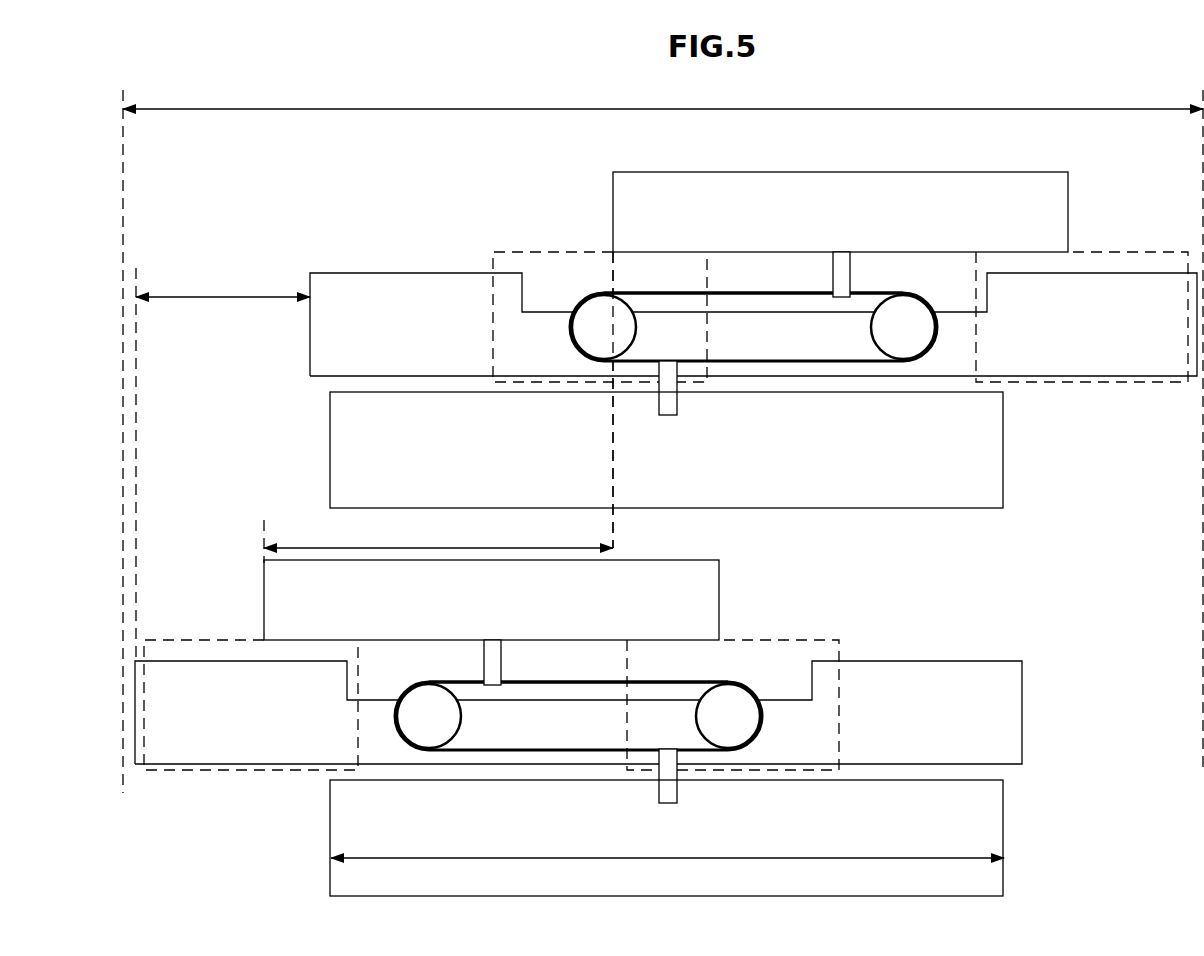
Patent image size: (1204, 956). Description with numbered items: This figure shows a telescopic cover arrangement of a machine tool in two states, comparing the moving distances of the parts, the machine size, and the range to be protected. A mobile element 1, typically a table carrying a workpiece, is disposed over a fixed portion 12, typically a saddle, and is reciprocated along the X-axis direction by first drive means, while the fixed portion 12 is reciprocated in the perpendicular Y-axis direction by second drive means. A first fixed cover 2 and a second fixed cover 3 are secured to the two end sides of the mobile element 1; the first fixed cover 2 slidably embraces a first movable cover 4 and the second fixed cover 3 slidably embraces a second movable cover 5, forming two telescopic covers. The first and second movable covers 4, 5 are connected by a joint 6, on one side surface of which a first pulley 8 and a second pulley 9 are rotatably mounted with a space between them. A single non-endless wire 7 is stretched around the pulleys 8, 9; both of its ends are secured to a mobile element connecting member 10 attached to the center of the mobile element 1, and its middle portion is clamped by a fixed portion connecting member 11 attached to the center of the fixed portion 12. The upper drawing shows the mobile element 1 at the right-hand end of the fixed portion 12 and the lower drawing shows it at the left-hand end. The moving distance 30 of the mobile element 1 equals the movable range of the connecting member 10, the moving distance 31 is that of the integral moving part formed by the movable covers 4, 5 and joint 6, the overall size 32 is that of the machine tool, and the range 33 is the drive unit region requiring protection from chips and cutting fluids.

The mobile element 1 is at (846, 171).
The first fixed cover 2 is at (565, 250).
The second fixed cover 3 is at (1111, 249).
The first movable cover 4 is at (453, 271).
The second movable cover 5 is at (1134, 271).
The joint 6 is at (954, 337).
The wire 7 is at (762, 290).
The first pulley 8 is at (597, 291).
The second pulley 9 is at (891, 304).
The mobile element connecting member 10 is at (832, 272).
The fixed portion connecting member 11 is at (677, 415).
The fixed portion 12 is at (1006, 420).
The moving distance of the mobile element 30 is at (410, 548).
The moving distance of the moving part 31 is at (236, 297).
The overall size of the machine tool 32 is at (405, 112).
The range of the drive unit requiring protection 33 is at (580, 864).